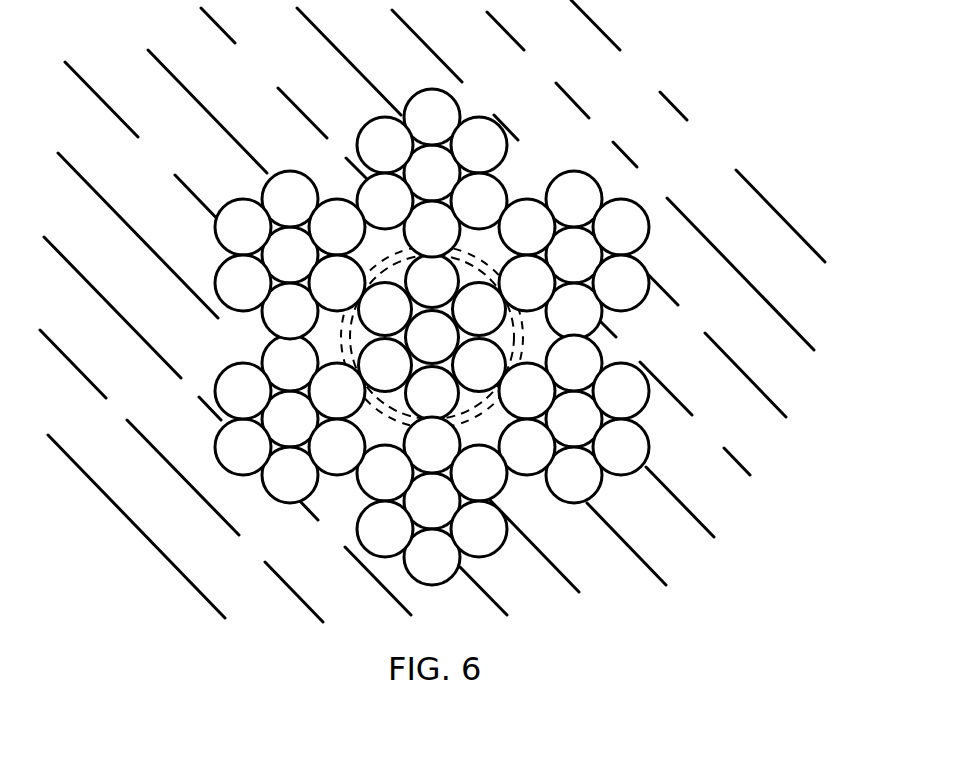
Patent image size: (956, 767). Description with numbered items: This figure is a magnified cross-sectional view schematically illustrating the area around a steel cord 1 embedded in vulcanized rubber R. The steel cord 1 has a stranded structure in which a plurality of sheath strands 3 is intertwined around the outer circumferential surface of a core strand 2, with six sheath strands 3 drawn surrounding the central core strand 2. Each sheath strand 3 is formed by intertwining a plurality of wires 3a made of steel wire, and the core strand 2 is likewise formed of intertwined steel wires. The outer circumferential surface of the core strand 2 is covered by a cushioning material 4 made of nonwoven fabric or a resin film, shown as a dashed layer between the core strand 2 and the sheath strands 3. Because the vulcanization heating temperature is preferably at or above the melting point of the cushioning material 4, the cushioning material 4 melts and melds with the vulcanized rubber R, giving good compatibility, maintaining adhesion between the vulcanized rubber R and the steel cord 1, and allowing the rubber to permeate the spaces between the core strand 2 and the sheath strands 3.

The steel cord 1 is at (417, 299).
The core strand 2 is at (528, 240).
The sheath strands 3 is at (220, 170).
The wires 3a is at (233, 397).
The cushioning material 4 is at (377, 262).
The vulcanized rubber R is at (432, 311).